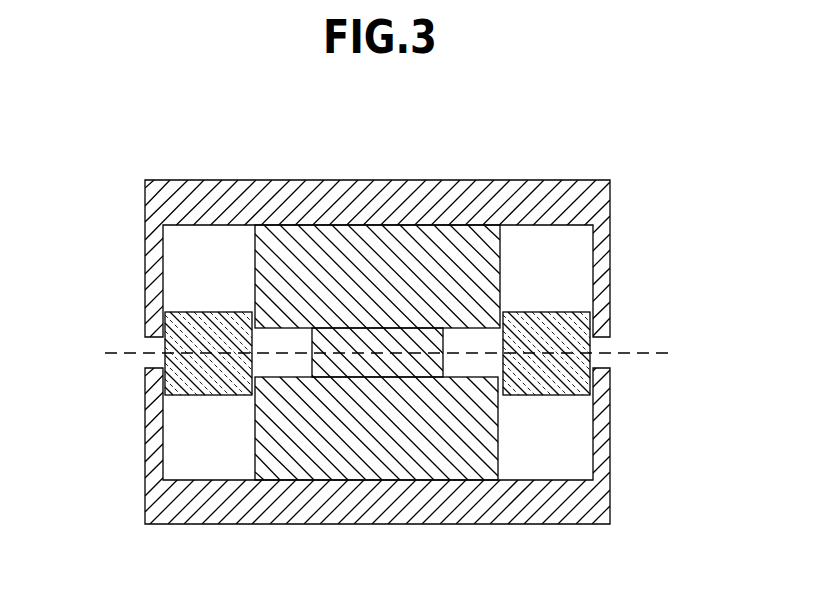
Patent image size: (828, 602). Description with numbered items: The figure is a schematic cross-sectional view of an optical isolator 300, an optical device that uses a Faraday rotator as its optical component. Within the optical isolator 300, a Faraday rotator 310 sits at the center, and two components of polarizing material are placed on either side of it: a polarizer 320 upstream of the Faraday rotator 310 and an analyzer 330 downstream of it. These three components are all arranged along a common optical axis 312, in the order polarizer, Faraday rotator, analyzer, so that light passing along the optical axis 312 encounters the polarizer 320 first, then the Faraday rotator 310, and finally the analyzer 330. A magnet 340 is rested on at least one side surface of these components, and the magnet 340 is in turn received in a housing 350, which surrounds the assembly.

The optical isolator 300 is at (170, 170).
The Faraday rotator 310 is at (336, 335).
The optical axis 312 is at (647, 351).
The polarizer 320 is at (165, 380).
The analyzer 330 is at (592, 383).
The magnet 340 is at (400, 503).
The housing 350 is at (246, 192).